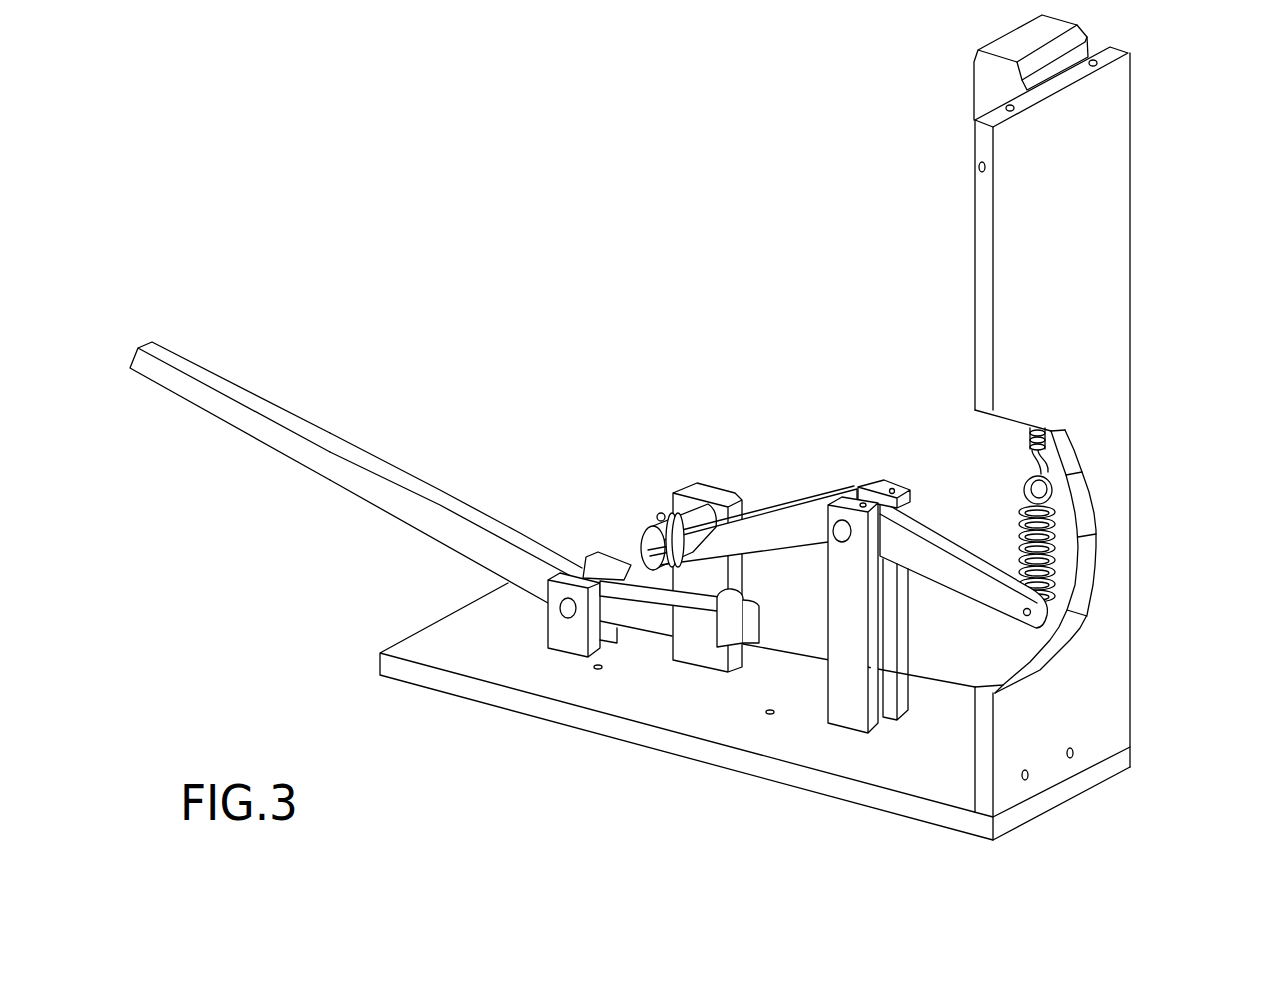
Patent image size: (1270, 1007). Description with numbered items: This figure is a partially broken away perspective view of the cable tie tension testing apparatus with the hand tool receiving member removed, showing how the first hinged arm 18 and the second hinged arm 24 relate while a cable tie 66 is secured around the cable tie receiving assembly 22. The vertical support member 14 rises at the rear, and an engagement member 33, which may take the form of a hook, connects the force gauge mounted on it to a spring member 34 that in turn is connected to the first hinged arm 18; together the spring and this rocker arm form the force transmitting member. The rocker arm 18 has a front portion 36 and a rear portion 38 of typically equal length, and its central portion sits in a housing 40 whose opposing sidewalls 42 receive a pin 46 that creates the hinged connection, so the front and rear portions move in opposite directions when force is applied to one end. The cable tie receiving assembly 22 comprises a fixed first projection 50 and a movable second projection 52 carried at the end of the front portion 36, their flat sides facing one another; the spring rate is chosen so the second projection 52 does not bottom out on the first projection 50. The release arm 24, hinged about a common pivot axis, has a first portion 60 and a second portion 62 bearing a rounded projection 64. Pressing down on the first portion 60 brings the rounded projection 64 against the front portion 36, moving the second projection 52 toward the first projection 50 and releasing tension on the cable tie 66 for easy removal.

The vertical support member 14 is at (1100, 680).
The first hinged arm 18 is at (853, 614).
The cable tie receiving assembly 22 is at (608, 483).
The second hinged arm 24 is at (380, 463).
The engagement member 33 is at (1067, 470).
The spring member 34 is at (1058, 553).
The front portion 36 is at (802, 503).
The rear portion 38 is at (962, 580).
The housing 40 is at (762, 688).
The opposing sidewalls 42 is at (878, 482).
The pin 46 is at (840, 540).
The first projection 50 is at (690, 510).
The second projection 52 is at (630, 557).
The first portion 60 is at (333, 472).
The second portion 62 is at (615, 707).
The rounded projection 64 is at (740, 648).
The cable tie 66 is at (658, 514).